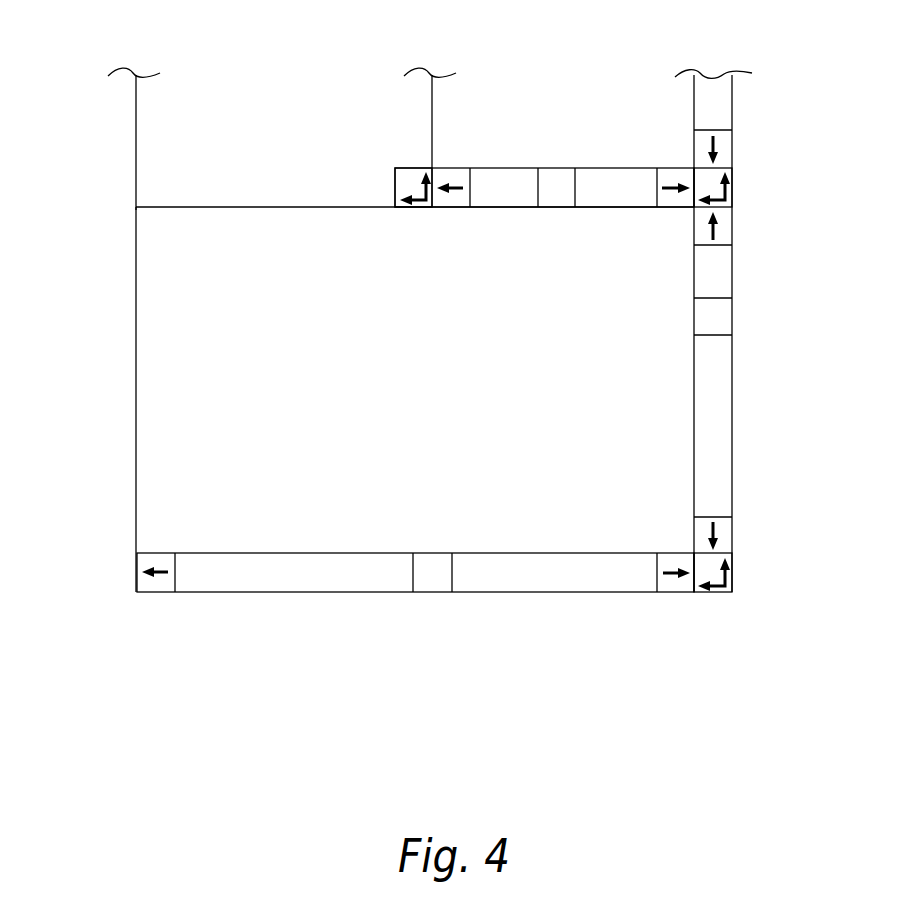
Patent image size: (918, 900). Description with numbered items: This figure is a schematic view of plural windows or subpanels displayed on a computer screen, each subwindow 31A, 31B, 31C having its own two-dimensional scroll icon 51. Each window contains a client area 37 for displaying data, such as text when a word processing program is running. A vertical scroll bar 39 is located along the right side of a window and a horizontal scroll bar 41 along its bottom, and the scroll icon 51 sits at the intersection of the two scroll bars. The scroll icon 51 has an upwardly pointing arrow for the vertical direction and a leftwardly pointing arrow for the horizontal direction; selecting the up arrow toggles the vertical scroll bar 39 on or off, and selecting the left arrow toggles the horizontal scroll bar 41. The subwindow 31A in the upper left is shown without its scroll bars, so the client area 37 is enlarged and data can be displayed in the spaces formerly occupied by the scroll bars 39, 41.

The client area 37 is at (247, 106).
The subwindow 31A is at (152, 167).
The subwindow 31B is at (628, 132).
The subwindow 31C is at (152, 377).
The vertical scroll bar 39 is at (713, 438).
The horizontal scroll bar 41 is at (368, 572).
The two-dimensional scroll icon 51 is at (412, 168).